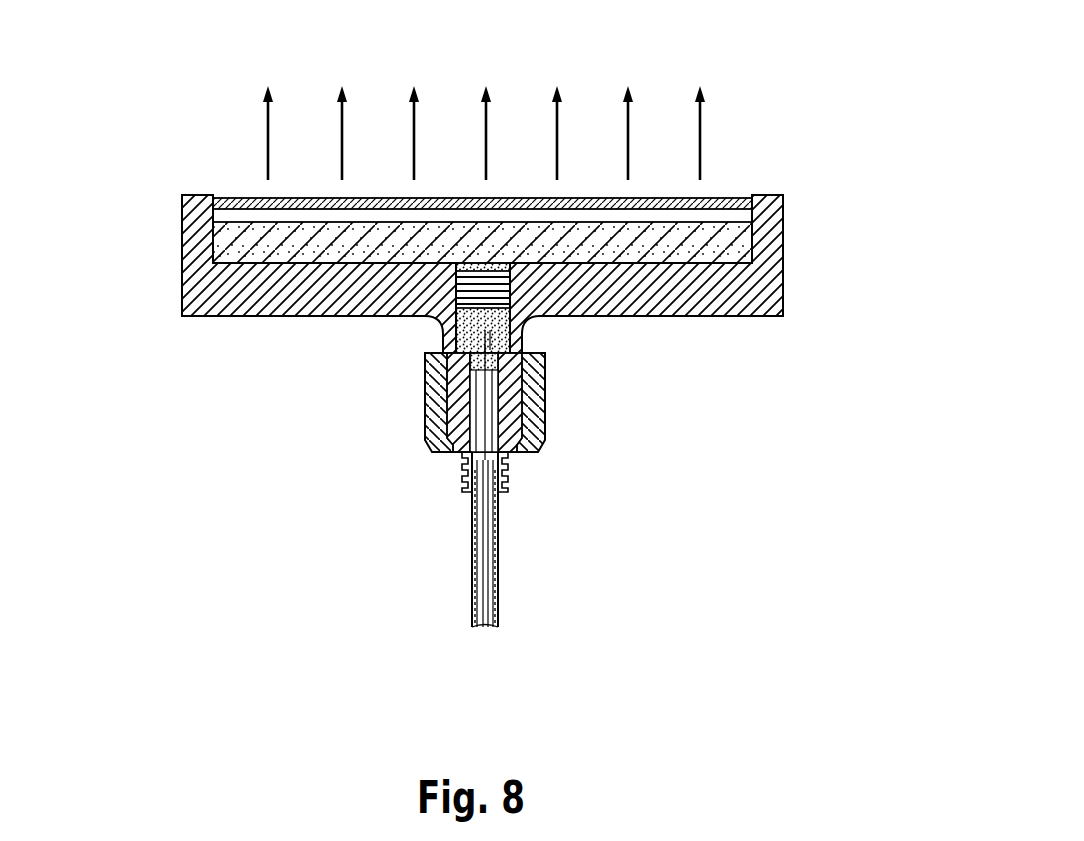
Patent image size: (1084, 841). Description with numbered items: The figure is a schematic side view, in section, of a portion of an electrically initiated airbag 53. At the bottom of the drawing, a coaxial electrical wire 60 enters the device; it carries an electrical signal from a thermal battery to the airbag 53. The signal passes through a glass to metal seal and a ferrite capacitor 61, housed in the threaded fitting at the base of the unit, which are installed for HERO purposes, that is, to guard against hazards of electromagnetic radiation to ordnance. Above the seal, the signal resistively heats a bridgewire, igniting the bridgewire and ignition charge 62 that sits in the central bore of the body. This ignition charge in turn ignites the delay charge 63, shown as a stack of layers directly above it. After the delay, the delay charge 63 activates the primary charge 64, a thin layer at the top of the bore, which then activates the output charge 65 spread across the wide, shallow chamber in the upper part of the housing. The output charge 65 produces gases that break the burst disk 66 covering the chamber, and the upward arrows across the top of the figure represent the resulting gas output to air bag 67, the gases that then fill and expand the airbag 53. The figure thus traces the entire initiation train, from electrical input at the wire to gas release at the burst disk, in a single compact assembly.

The electrically initiated airbag 53 is at (120, 272).
The coaxial electrical wire 60 is at (500, 559).
The glass to metal seal and ferrite capacitor 61 is at (545, 397).
The ignition charge 62 is at (520, 338).
The delay charge 63 is at (455, 283).
The primary charge 64 is at (457, 268).
The output charge 65 is at (722, 251).
The burst disk 66 is at (249, 196).
The gas output to air bag 67 is at (484, 98).